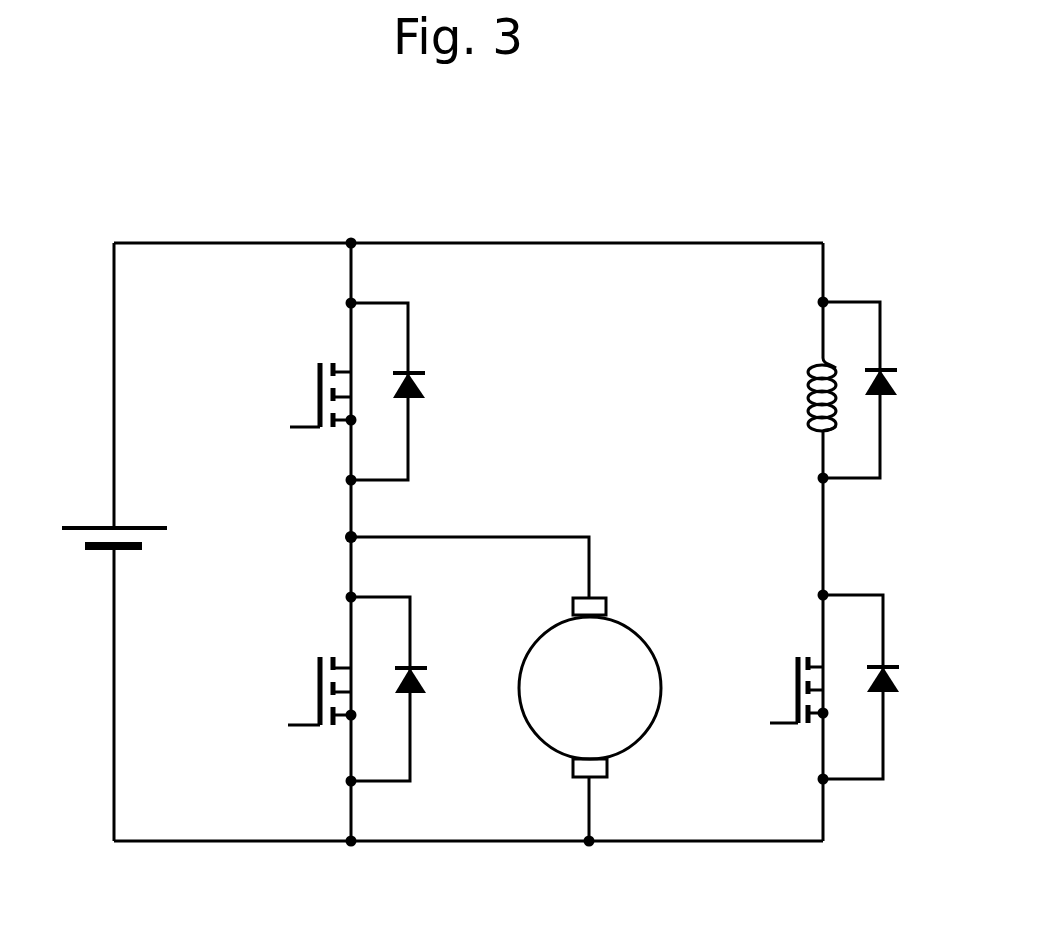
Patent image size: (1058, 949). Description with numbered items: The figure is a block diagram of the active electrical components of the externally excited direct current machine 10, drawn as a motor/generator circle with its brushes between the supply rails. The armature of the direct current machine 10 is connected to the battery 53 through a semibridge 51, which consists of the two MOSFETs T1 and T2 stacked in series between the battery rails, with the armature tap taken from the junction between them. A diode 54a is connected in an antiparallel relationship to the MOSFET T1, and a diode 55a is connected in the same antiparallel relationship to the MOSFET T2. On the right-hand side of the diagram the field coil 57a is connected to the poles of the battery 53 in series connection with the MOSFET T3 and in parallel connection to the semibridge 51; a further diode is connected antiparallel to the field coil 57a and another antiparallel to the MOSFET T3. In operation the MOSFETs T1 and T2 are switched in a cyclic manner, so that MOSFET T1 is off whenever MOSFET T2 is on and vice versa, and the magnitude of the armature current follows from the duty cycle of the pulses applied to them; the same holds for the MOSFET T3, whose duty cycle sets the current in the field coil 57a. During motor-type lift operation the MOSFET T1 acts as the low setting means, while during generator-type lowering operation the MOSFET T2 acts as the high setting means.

The direct current machine 10 is at (645, 626).
The semibridge 51 is at (338, 536).
The battery 53 is at (101, 523).
The diode 54a is at (423, 388).
The diode 55a is at (427, 690).
The field coil 57a is at (808, 397).
The MOSFET T1 is at (313, 391).
The MOSFET T2 is at (313, 691).
The MOSFET T3 is at (824, 687).